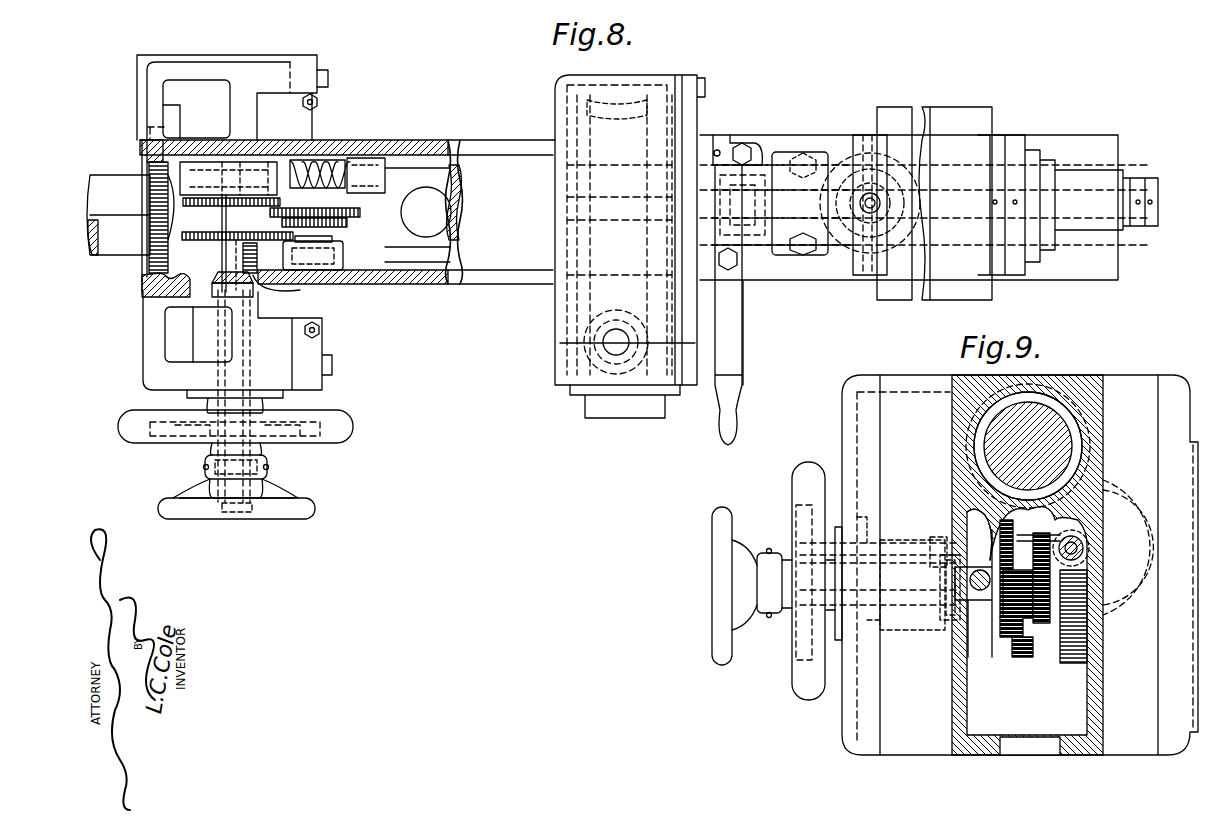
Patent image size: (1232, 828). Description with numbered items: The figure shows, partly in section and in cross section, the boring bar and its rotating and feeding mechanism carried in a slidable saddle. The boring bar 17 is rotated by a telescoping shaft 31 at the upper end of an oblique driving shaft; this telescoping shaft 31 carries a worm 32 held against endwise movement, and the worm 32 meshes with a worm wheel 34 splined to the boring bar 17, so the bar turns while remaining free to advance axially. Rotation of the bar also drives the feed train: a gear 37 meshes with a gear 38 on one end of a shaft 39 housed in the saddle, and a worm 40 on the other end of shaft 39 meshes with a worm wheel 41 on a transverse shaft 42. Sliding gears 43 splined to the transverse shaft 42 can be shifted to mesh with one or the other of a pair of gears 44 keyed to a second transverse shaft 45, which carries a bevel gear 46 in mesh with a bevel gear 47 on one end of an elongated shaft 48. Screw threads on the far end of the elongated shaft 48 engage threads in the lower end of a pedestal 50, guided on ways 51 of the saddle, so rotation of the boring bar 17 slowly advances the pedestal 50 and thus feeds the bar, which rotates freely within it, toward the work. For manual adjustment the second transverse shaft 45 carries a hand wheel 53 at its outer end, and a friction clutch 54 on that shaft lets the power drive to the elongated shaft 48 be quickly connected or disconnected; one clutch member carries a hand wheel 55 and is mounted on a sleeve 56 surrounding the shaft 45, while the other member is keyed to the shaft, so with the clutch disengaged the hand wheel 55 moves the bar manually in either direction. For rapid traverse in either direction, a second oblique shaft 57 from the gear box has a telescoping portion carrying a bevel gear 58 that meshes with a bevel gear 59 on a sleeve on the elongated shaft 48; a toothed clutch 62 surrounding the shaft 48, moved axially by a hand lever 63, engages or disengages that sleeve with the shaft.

In FIG. 8, the boring bar 17 is at (105, 187).
In FIG. 9, the boring bar 17 is at (1000, 457).
In FIG. 8, the telescoping shaft 31 is at (612, 340).
In FIG. 8, the worm 32 is at (650, 348).
In FIG. 8, the worm wheel 34 is at (683, 120).
In FIG. 8, the gear 37 is at (150, 265).
In FIG. 9, the gear 37 is at (1095, 452).
In FIG. 8, the gear 38 is at (148, 127).
In FIG. 9, the gear 38 is at (1130, 580).
In FIG. 8, the shaft 39 is at (275, 162).
In FIG. 9, the shaft 39 is at (1080, 549).
In FIG. 8, the worm 40 is at (325, 162).
In FIG. 9, the worm 40 is at (1115, 515).
In FIG. 8, the worm wheel 41 is at (360, 193).
In FIG. 9, the worm wheel 41 is at (1072, 665).
In FIG. 8, the transverse shaft 42 is at (300, 290).
In FIG. 9, the transverse shaft 42 is at (1050, 625).
In FIG. 8, the sliding gears 43 is at (345, 255).
In FIG. 8, the pair of gears 44 is at (237, 219).
In FIG. 9, the pair of gears 44 is at (1010, 556).
In FIG. 8, the second transverse shaft 45 is at (222, 252).
In FIG. 9, the second transverse shaft 45 is at (930, 595).
In FIG. 8, the bevel gear 46 is at (270, 285).
In FIG. 9, the bevel gear 46 is at (960, 605).
In FIG. 8, the bevel gear 47 is at (243, 270).
In FIG. 9, the bevel gear 47 is at (988, 640).
In FIG. 8, the elongated shaft 48 is at (445, 285).
In FIG. 9, the elongated shaft 48 is at (968, 525).
In FIG. 8, the pedestal 50 is at (955, 113).
In FIG. 8, the ways 51 is at (1105, 165).
In FIG. 8, the hand wheel 53 is at (300, 508).
In FIG. 9, the hand wheel 53 is at (725, 515).
In FIG. 8, the friction clutch 54 is at (165, 438).
In FIG. 8, the hand wheel 55 is at (345, 425).
In FIG. 9, the hand wheel 55 is at (808, 462).
In FIG. 8, the sleeve 56 is at (258, 292).
In FIG. 9, the sleeve 56 is at (920, 560).
In FIG. 8, the second oblique shaft 57 is at (880, 210).
In FIG. 8, the bevel gear 58 is at (866, 140).
In FIG. 8, the bevel gear 59 is at (848, 178).
In FIG. 8, the toothed clutch 62 is at (745, 230).
In FIG. 8, the hand lever 63 is at (735, 428).